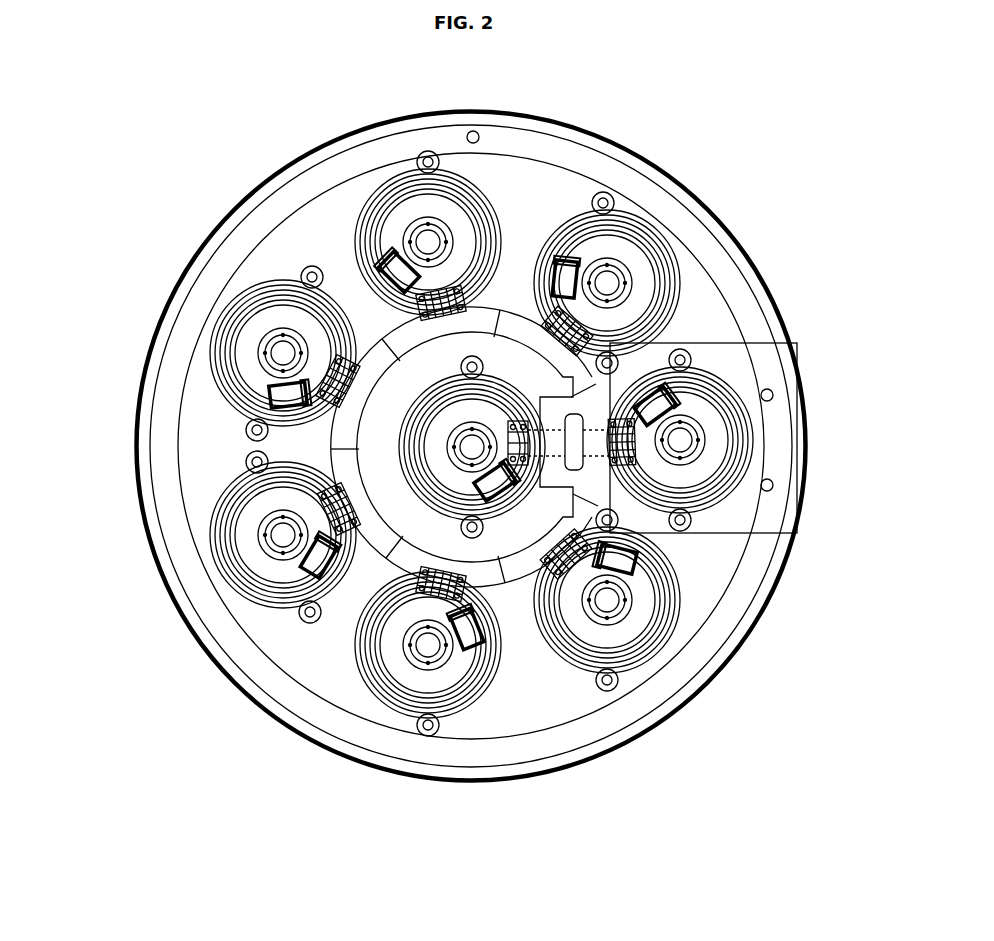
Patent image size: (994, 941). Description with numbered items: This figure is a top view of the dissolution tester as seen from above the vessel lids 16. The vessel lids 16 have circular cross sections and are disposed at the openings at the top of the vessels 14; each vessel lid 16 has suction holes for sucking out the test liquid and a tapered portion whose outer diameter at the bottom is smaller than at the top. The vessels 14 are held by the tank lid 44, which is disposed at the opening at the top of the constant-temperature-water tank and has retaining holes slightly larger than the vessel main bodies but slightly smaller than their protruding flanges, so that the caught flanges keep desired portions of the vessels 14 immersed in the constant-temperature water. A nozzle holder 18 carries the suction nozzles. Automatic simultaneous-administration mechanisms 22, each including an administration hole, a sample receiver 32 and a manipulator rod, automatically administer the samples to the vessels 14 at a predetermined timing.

The vessels 14 is at (490, 185).
The vessel lids 16 is at (372, 310).
The nozzle holder 18 is at (378, 333).
The automatic simultaneous-administration mechanisms 22 is at (503, 472).
The sample receiver 32 is at (567, 243).
The tank lid 44 is at (703, 302).